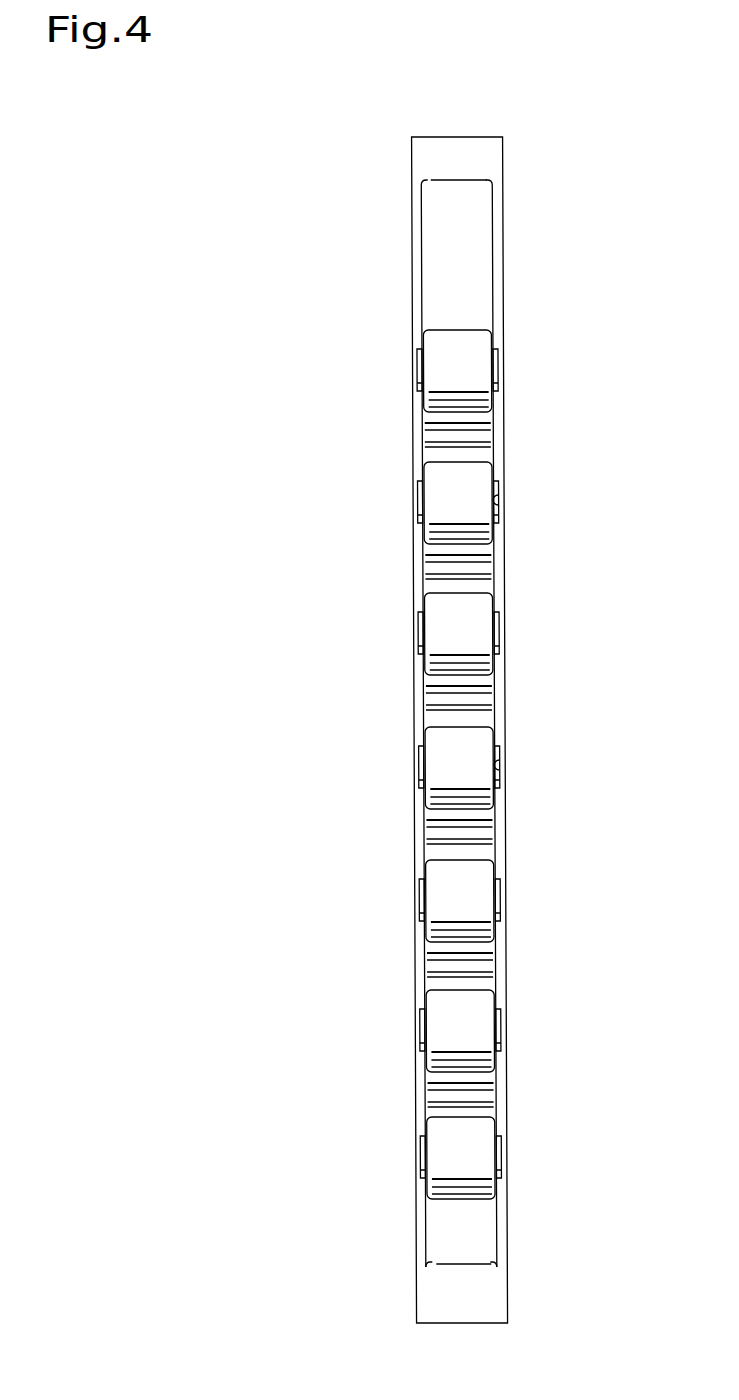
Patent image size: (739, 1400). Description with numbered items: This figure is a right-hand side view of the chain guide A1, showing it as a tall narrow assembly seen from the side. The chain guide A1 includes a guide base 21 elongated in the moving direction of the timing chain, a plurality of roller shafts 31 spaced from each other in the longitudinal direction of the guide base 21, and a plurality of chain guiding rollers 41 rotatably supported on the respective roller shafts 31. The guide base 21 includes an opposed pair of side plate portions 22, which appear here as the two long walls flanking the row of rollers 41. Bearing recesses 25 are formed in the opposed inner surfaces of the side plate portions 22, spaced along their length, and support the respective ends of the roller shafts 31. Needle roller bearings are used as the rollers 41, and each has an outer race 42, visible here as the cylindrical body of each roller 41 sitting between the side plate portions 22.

The chain guide A1 is at (410, 255).
The guide base 21 is at (412, 436).
The side plate portions 22 is at (502, 827).
The bearing recesses 25 is at (499, 503).
The roller shafts 31 is at (413, 502).
The chain guiding rollers 41 is at (458, 460).
The outer race 42 is at (443, 512).